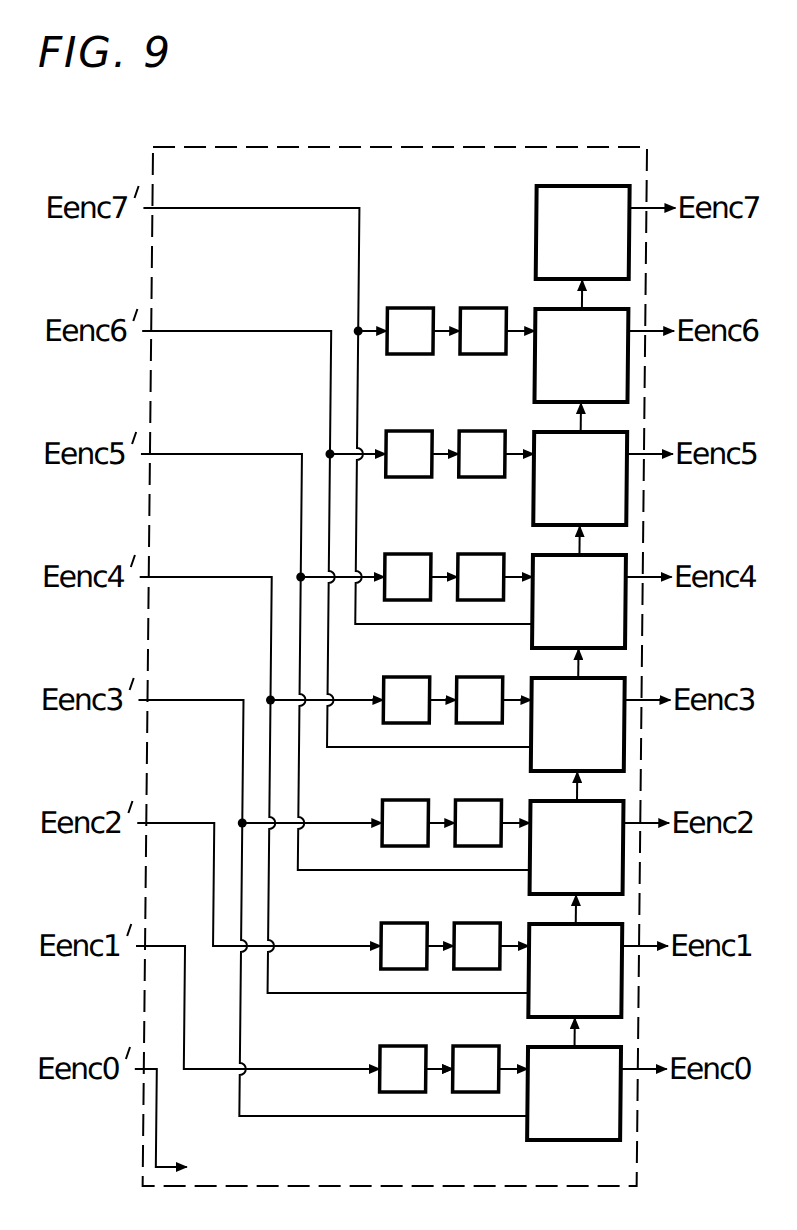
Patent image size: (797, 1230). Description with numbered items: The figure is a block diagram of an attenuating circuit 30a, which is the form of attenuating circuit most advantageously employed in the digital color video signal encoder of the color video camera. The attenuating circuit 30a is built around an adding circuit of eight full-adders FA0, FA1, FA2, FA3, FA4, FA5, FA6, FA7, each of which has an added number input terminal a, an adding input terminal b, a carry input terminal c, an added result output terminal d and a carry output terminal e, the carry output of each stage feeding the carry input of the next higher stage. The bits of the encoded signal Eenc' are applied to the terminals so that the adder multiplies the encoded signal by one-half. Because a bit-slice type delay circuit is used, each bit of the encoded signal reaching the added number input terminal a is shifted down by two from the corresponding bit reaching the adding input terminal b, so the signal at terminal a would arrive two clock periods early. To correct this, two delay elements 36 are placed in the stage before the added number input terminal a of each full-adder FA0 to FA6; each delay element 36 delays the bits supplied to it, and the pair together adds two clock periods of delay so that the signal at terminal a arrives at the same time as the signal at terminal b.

The attenuating circuit 30a is at (600, 147).
The delay element 36 is at (433, 665).
The full-adder FA7 is at (537, 208).
The full-adder FA6 is at (630, 395).
The full-adder FA5 is at (630, 518).
The full-adder FA4 is at (630, 641).
The full-adder FA3 is at (630, 764).
The full-adder FA2 is at (630, 887).
The full-adder FA1 is at (630, 1010).
The full-adder FA0 is at (630, 1133).